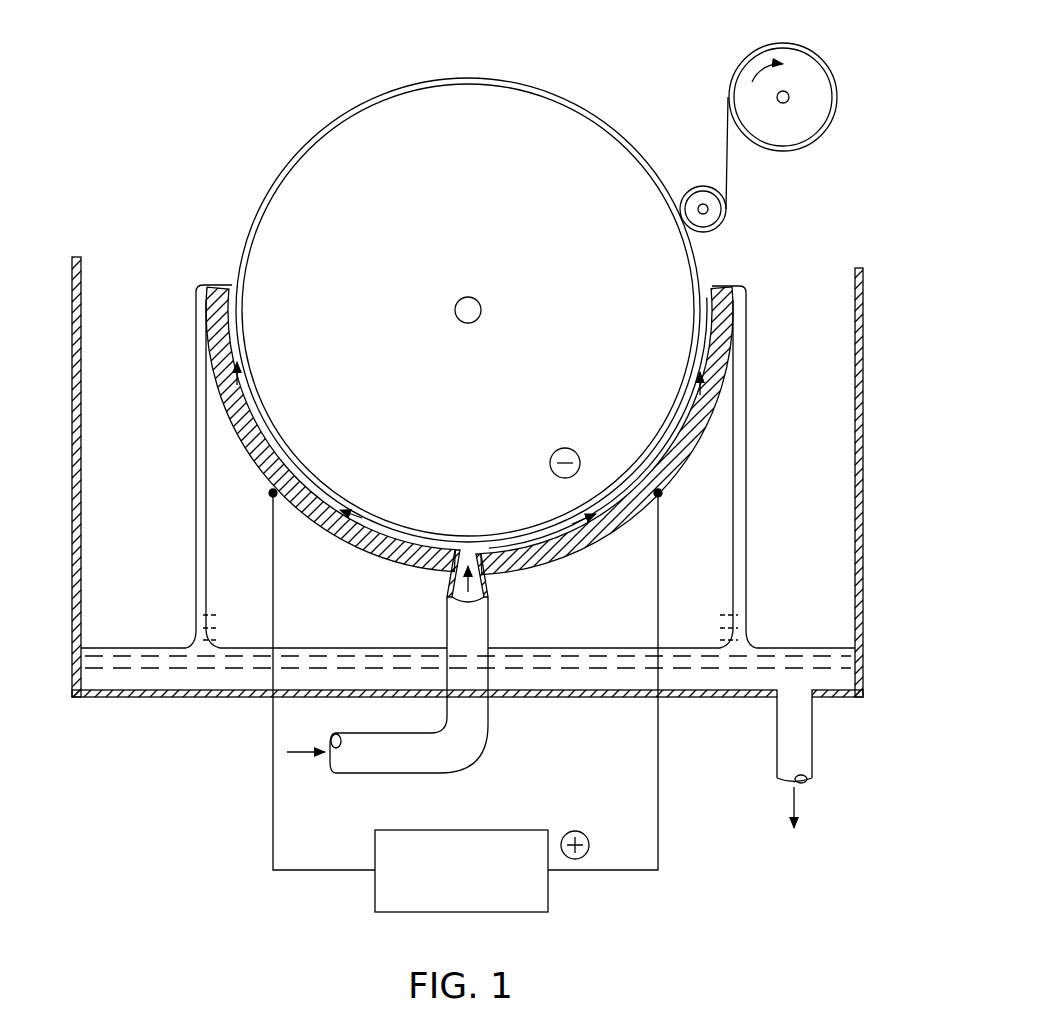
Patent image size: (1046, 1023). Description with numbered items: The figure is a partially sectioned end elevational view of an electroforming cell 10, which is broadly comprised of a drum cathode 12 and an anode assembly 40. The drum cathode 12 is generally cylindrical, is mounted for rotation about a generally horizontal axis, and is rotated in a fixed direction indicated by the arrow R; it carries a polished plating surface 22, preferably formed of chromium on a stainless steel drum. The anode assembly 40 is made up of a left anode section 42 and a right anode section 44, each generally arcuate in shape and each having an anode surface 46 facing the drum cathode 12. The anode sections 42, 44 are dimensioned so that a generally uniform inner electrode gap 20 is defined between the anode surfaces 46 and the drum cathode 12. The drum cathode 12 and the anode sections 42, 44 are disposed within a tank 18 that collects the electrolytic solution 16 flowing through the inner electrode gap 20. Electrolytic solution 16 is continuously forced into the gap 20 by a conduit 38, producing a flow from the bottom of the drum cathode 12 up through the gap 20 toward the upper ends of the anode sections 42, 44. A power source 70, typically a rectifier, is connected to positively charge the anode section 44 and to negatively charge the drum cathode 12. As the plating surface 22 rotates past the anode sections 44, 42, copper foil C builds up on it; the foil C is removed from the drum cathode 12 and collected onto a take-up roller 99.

The electroforming cell 10 is at (262, 80).
The drum cathode 12 is at (535, 92).
The plating surface 22 is at (695, 253).
The direction of rotation R is at (658, 322).
The take-up roller 99 is at (805, 75).
The copper foil C is at (726, 140).
The tank 18 is at (83, 272).
The left anode section 42 is at (327, 533).
The right anode section 44 is at (597, 545).
The inner electrode gap 20 is at (645, 477).
The anode surface 46 is at (270, 447).
The anode assembly 40 is at (388, 568).
The conduit 38 is at (473, 718).
The electrolytic solution 16 is at (537, 537).
The power source 70 is at (510, 830).